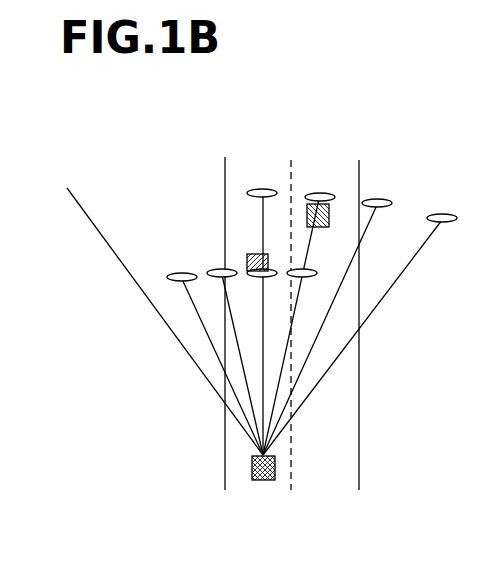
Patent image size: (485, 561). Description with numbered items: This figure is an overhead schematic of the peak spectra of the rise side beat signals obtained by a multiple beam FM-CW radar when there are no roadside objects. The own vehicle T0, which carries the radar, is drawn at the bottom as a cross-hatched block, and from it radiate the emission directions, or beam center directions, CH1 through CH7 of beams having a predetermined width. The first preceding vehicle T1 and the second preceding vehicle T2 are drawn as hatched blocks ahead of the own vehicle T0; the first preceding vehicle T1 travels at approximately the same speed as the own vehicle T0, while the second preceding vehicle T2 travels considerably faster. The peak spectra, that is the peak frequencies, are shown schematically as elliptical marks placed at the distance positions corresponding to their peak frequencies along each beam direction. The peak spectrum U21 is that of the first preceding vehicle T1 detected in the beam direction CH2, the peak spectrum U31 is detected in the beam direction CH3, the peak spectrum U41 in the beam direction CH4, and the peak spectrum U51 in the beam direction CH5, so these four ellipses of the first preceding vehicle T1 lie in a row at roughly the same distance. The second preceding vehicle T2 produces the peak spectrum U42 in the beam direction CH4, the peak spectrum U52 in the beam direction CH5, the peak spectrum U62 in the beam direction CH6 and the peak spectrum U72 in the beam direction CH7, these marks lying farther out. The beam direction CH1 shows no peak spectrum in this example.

The beam direction CH1 is at (153, 303).
The beam direction CH2 is at (180, 275).
The beam direction CH3 is at (223, 271).
The beam direction CH4 is at (263, 152).
The beam direction CH5 is at (328, 153).
The beam direction CH6 is at (397, 162).
The beam direction CH7 is at (445, 213).
The peak spectrum U21 is at (181, 282).
The peak spectrum U31 is at (222, 278).
The peak spectrum U41 is at (262, 278).
The peak spectrum U51 is at (302, 278).
The peak spectrum U42 is at (265, 176).
The peak spectrum U52 is at (325, 178).
The peak spectrum U62 is at (391, 184).
The peak spectrum U72 is at (433, 236).
The own vehicle T0 is at (267, 482).
The first preceding vehicle T1 is at (250, 254).
The second preceding vehicle T2 is at (329, 212).